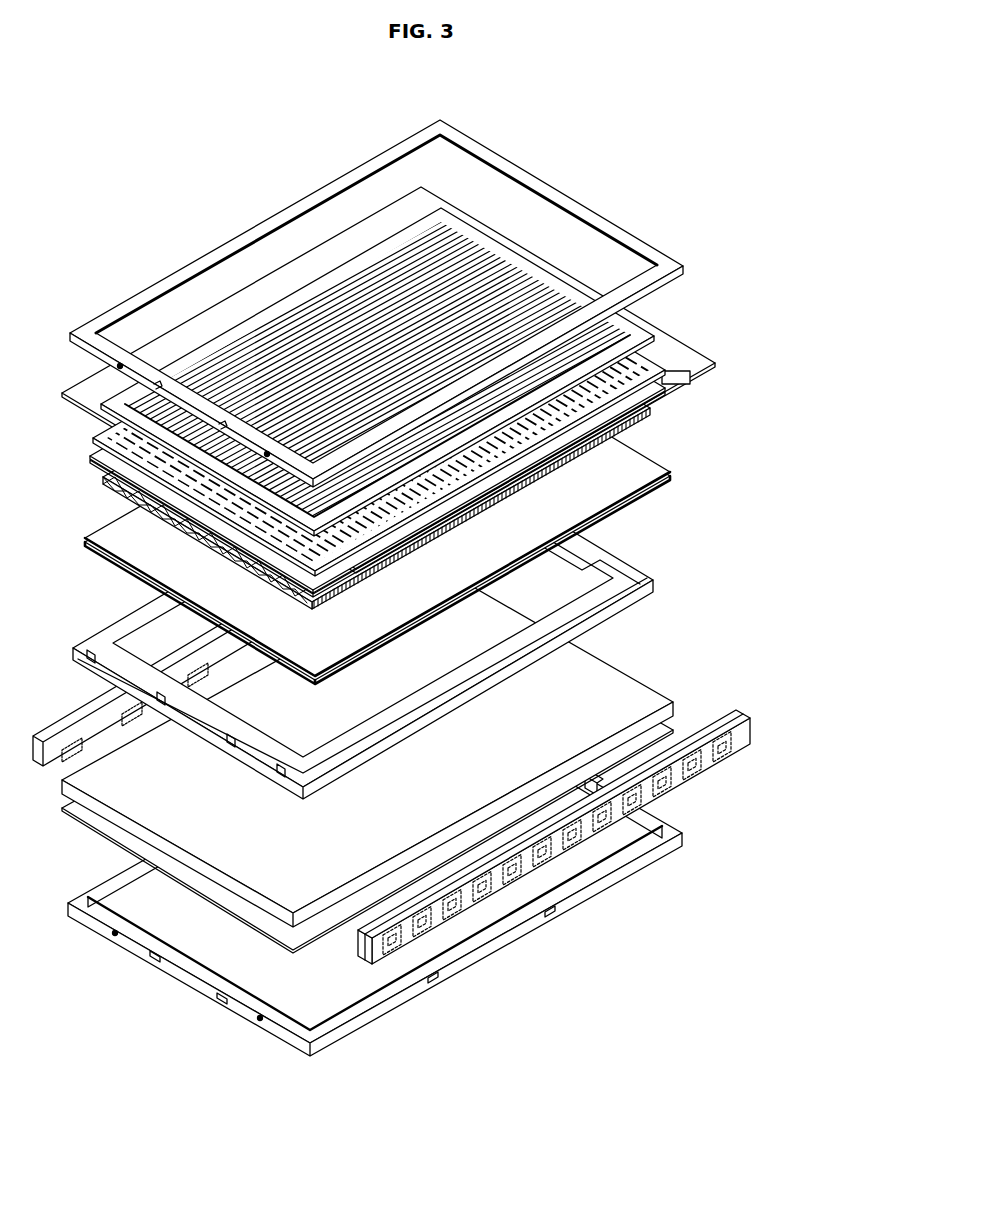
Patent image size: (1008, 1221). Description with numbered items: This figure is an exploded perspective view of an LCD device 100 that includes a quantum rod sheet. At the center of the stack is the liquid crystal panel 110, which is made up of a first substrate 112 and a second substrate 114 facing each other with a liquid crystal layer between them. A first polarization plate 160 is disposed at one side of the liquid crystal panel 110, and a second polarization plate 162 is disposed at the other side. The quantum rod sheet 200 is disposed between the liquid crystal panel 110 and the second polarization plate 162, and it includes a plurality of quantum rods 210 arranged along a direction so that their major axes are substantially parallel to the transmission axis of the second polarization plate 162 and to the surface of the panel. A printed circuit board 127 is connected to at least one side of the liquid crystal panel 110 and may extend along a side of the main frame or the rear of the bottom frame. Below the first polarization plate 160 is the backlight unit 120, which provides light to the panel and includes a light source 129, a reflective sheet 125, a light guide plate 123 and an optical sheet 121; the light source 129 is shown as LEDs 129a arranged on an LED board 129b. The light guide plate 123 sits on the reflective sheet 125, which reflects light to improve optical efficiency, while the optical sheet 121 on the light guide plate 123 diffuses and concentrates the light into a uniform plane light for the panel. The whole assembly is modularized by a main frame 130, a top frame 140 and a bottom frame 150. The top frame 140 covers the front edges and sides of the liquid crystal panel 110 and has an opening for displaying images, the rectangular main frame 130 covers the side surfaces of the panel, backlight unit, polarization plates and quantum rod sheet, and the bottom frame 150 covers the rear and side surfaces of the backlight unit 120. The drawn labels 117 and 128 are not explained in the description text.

The LCD device 100 is at (575, 142).
The top frame 140 is at (676, 262).
The panel edge portion 117 is at (362, 252).
The second polarization plate 162 is at (692, 382).
The quantum rod sheet 200 is at (658, 394).
The quantum rods 210 is at (652, 410).
The liquid crystal panel 110 is at (790, 462).
The second substrate 114 is at (666, 390).
The first substrate 112 is at (655, 403).
The first polarization plate 160 is at (633, 450).
The optical sheet 121 is at (784, 592).
The prism sheet 128 is at (693, 493).
The printed circuit board 127 is at (667, 520).
The main frame 130 is at (602, 613).
The light guide plate 123 is at (647, 693).
The reflective sheet 125 is at (682, 714).
The light source 129 is at (815, 738).
The LEDs 129a is at (742, 742).
The LED board 129b is at (742, 719).
The backlight unit 120 is at (836, 573).
The bottom frame 150 is at (684, 845).